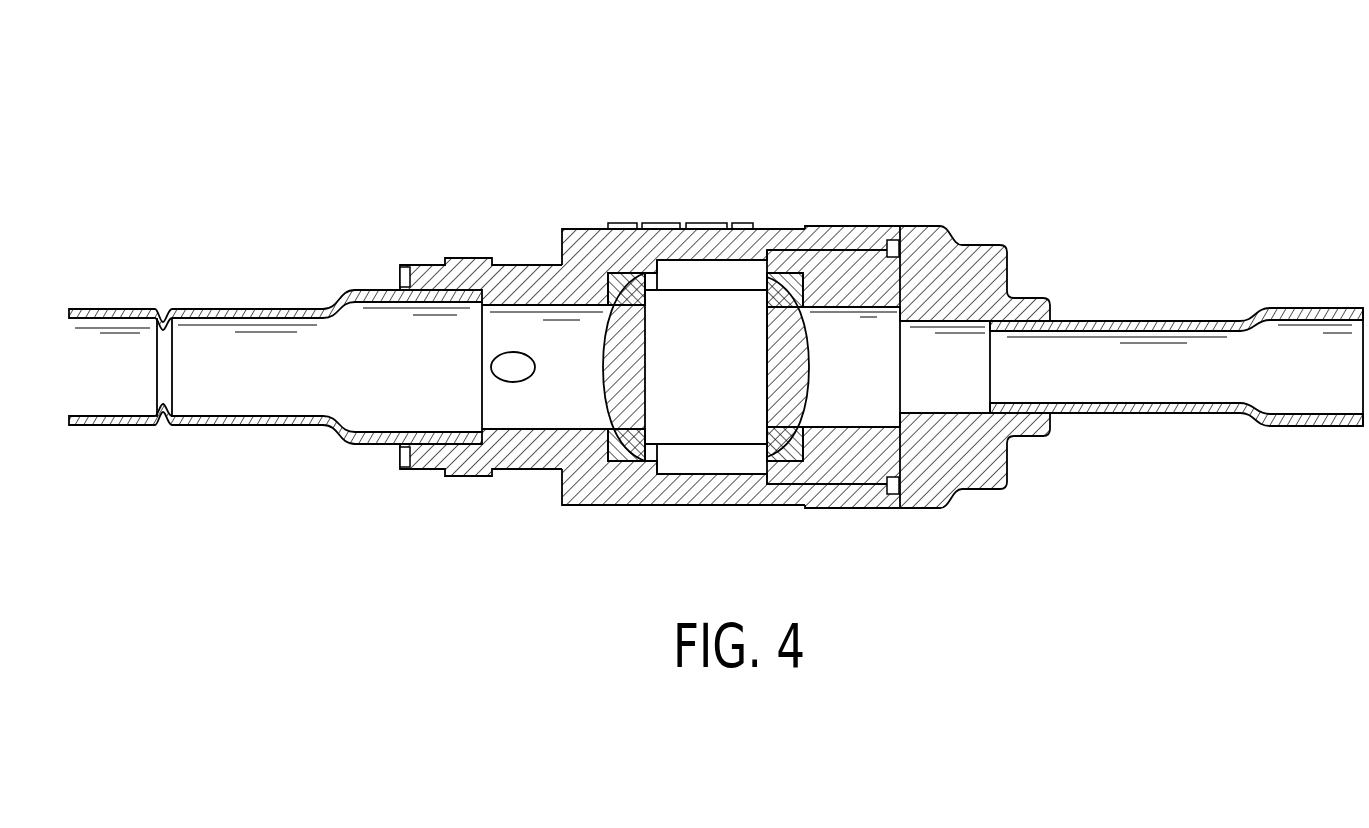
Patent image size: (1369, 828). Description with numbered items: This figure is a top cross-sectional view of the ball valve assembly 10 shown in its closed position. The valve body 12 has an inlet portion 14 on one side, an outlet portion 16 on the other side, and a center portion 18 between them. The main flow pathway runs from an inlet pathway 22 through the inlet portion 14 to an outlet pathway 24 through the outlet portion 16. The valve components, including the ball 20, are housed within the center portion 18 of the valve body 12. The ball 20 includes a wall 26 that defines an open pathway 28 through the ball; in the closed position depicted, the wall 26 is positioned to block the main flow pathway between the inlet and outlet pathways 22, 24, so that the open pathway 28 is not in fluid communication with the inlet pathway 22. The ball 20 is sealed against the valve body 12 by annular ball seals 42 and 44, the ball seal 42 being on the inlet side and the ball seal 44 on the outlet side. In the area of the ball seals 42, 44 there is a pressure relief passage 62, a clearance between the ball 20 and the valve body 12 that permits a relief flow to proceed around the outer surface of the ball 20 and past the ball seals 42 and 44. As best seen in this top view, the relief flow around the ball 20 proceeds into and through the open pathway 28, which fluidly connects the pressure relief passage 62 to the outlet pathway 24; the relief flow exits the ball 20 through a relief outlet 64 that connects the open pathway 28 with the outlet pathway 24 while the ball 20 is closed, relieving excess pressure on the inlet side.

The ball valve assembly 10 is at (917, 140).
The valve body 12 is at (497, 177).
The inlet portion 14 is at (228, 305).
The outlet portion 16 is at (1197, 322).
The center portion 18 is at (580, 229).
The ball 20 is at (637, 388).
The inlet pathway 22 is at (217, 385).
The outlet pathway 24 is at (1158, 378).
The wall 26 is at (603, 390).
The open pathway 28 is at (732, 400).
The ball seal 42 is at (620, 283).
The ball seal 44 is at (791, 283).
The pressure relief passage 62 is at (682, 463).
The relief outlet 64 is at (797, 373).